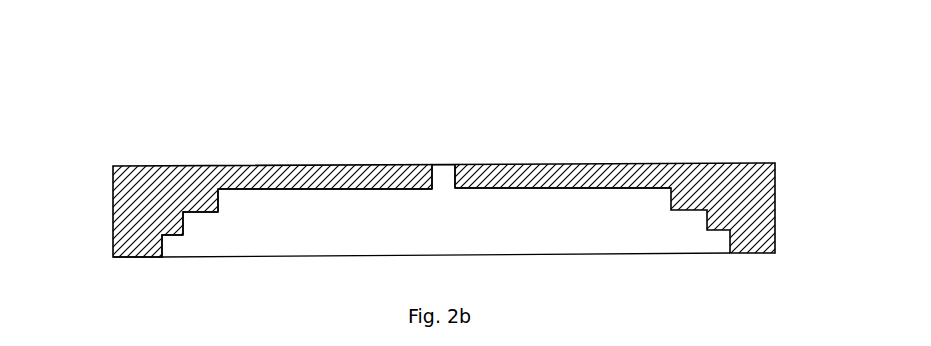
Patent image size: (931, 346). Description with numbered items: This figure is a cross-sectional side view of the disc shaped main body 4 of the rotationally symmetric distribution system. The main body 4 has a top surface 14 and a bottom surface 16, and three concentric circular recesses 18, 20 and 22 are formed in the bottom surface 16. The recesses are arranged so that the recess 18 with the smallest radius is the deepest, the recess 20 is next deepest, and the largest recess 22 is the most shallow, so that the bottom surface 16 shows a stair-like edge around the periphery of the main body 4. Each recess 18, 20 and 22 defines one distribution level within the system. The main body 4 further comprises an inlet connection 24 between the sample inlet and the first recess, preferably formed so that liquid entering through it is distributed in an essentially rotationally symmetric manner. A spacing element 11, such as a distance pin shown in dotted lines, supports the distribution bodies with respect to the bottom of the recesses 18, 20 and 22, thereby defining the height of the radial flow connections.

The main body 4 is at (130, 176).
The bottom surface 16 is at (263, 188).
The inlet connection 24 is at (443, 166).
The top surface 14 is at (130, 257).
The circular recess 22 is at (173, 236).
The circular recess 20 is at (207, 212).
The circular recess 18 is at (285, 190).
The spacing element 11 is at (520, 190).